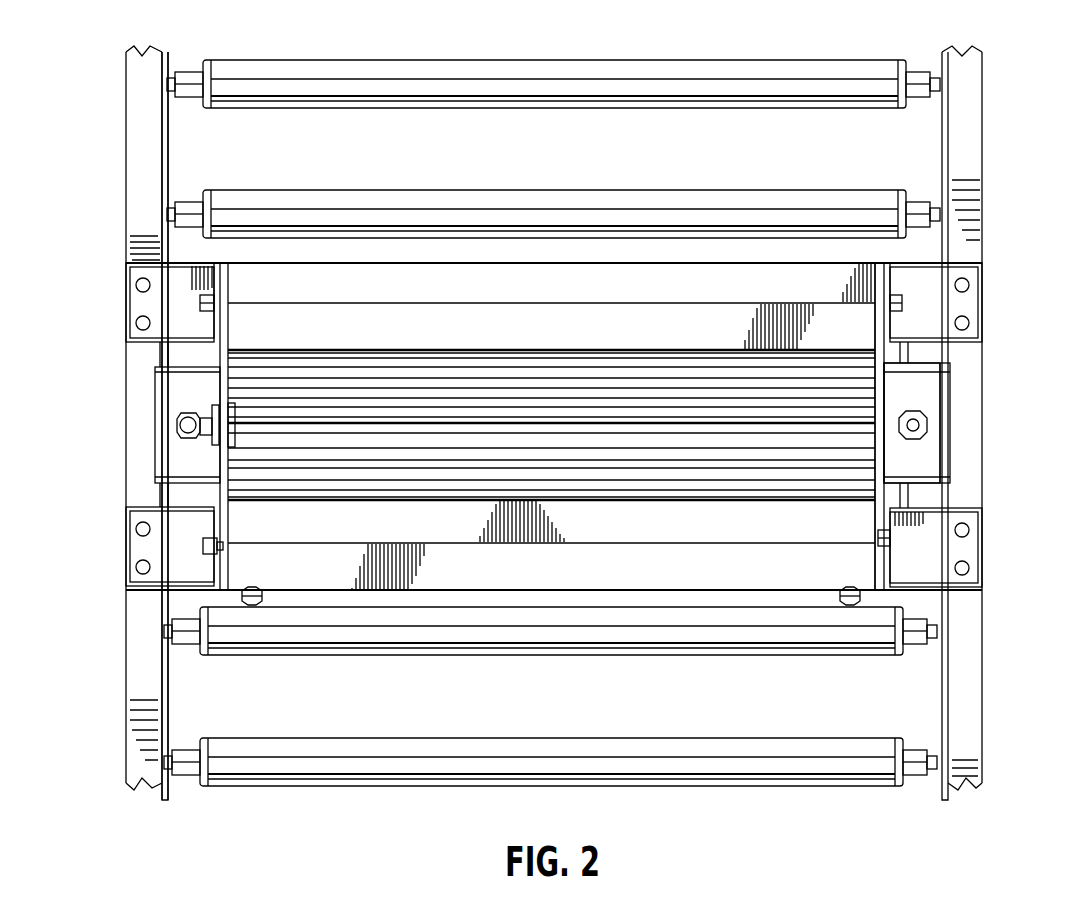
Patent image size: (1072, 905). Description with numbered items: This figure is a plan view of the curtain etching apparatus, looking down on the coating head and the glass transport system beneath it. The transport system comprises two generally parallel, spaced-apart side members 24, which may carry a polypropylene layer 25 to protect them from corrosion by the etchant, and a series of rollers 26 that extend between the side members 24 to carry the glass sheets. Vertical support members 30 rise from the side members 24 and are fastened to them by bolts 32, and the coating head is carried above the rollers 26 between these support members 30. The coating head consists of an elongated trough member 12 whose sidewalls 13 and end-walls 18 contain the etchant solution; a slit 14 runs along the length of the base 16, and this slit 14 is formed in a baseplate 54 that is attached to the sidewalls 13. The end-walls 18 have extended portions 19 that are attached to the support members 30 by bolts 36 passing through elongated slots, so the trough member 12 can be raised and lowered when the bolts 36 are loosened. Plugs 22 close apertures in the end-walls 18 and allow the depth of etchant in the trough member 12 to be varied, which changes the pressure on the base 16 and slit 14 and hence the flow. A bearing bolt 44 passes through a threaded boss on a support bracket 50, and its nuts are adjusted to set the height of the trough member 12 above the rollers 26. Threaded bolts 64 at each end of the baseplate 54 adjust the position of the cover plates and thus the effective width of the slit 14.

The trough member 12 is at (822, 352).
The sidewalls 13 is at (730, 352).
The slit 14 is at (637, 425).
The base 16 is at (576, 378).
The end-walls 18 is at (205, 452).
The extended portions 19 is at (225, 200).
The plugs 22 is at (182, 425).
The side members 24 is at (150, 775).
The polypropylene layer 25 is at (172, 790).
The rollers 26 is at (303, 74).
The support members 30 is at (145, 244).
The bolts 32 is at (136, 285).
The bolts 36 is at (198, 302).
The bearing bolt 44 is at (925, 422).
The support bracket 50 is at (935, 445).
The baseplate 54 is at (400, 275).
The threaded bolts 64 is at (253, 602).